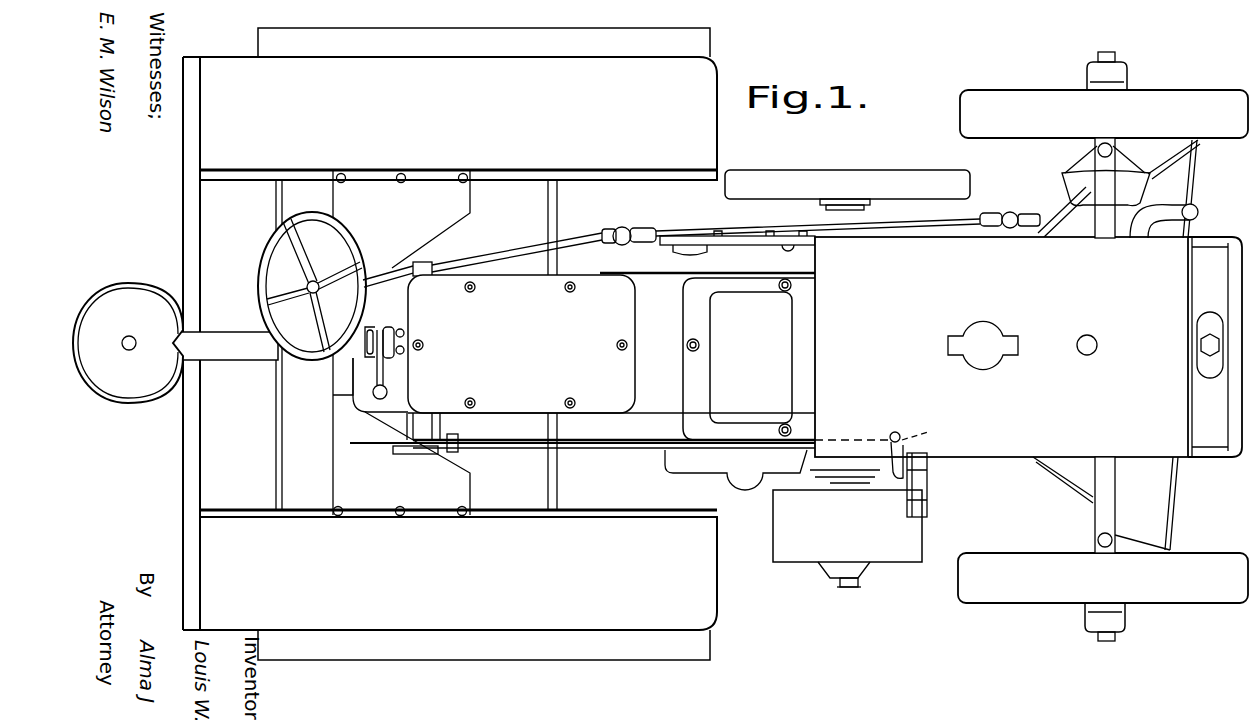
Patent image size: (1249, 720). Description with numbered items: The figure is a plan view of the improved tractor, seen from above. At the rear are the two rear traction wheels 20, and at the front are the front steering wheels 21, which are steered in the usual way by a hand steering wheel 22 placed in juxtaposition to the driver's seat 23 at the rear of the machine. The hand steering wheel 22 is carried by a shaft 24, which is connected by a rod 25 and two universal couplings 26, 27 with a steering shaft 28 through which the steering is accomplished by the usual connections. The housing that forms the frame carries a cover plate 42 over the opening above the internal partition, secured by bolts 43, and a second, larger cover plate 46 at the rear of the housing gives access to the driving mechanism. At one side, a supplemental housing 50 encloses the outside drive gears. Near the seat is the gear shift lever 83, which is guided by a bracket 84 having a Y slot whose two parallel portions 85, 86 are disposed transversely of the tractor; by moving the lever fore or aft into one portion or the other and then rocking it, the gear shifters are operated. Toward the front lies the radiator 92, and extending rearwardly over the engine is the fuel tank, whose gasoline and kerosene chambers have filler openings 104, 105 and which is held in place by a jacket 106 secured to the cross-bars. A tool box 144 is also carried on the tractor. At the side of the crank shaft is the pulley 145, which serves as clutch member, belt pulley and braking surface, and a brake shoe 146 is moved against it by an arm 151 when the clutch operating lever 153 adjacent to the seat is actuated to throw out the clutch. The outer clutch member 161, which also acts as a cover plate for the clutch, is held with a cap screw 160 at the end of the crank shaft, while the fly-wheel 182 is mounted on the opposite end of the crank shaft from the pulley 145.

The rear traction wheels 20 is at (700, 43).
The front steering wheels 21 is at (1158, 100).
The hand steering wheel 22 is at (352, 240).
The driver's seat 23 is at (148, 395).
The shaft 24 is at (517, 258).
The rod 25 is at (738, 234).
The universal coupling 26 is at (640, 228).
The universal coupling 27 is at (1003, 214).
The steering shaft 28 is at (1050, 222).
The cover plate 42 is at (702, 400).
The bolts 43 is at (785, 279).
The cover plate 46 is at (611, 430).
The supplemental housing 50 is at (717, 458).
The gear shift lever 83 is at (386, 377).
The bracket 84 is at (383, 325).
The slot portion 85 is at (395, 325).
The slot portion 86 is at (375, 347).
The radiator 92 is at (1215, 347).
The filler opening 104 is at (1084, 342).
The filler opening 105 is at (984, 338).
The jacket 106 is at (1012, 447).
The tool box 144 is at (749, 359).
The pulley 145 is at (903, 550).
The brake shoe 146 is at (928, 505).
The arm 151 is at (918, 438).
The clutch operating lever 153 is at (380, 443).
The cap screw 160 is at (851, 589).
The clutch member 161 is at (830, 568).
The fly-wheel 182 is at (782, 185).